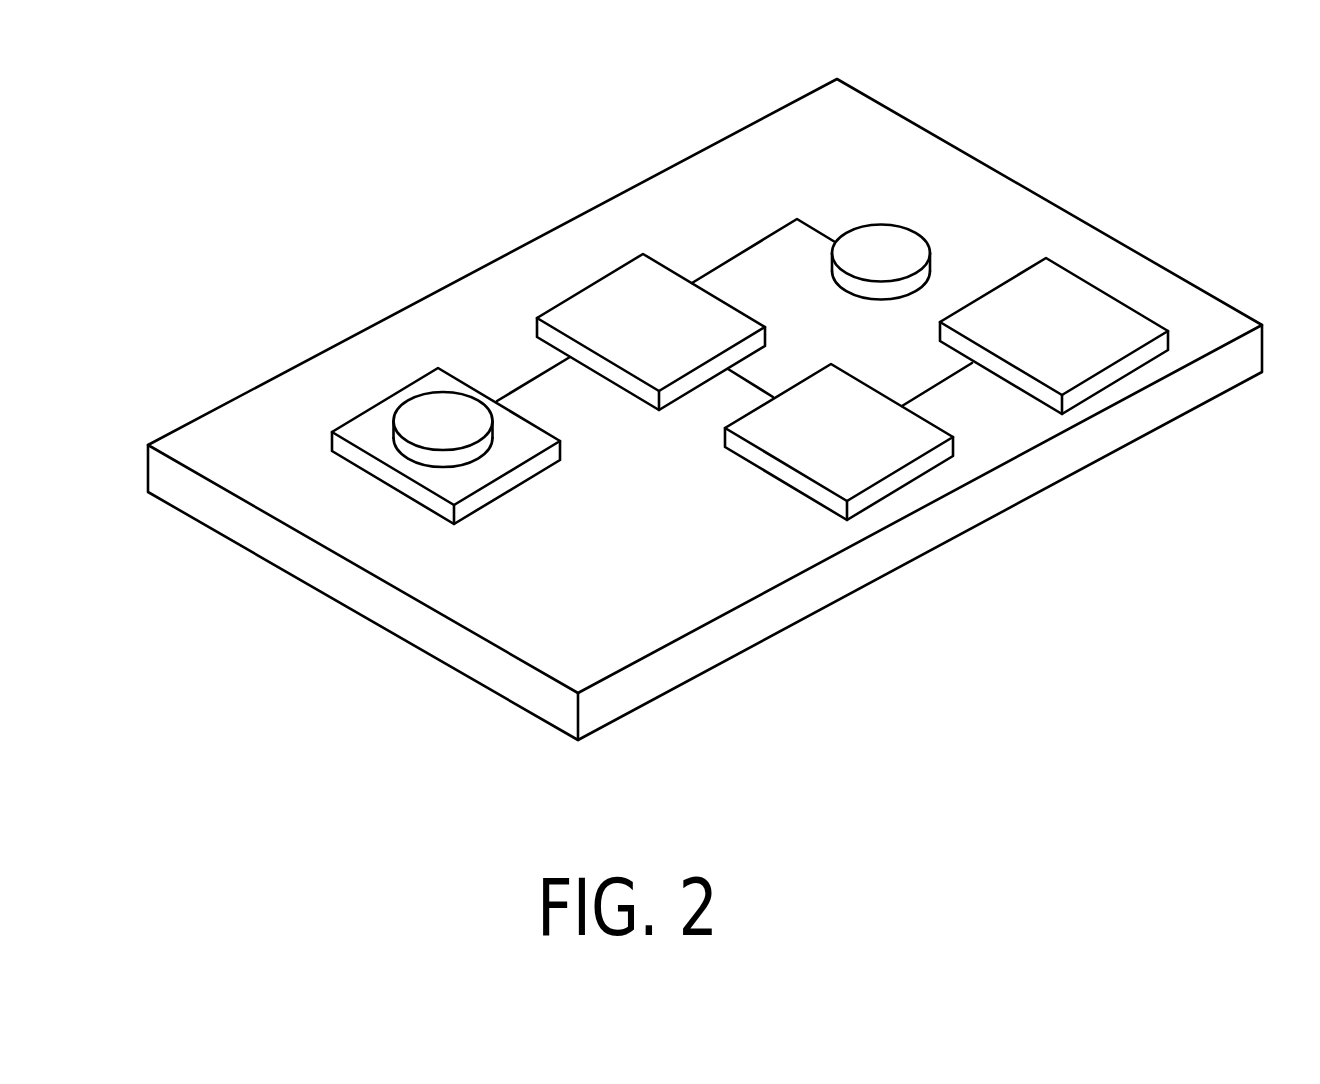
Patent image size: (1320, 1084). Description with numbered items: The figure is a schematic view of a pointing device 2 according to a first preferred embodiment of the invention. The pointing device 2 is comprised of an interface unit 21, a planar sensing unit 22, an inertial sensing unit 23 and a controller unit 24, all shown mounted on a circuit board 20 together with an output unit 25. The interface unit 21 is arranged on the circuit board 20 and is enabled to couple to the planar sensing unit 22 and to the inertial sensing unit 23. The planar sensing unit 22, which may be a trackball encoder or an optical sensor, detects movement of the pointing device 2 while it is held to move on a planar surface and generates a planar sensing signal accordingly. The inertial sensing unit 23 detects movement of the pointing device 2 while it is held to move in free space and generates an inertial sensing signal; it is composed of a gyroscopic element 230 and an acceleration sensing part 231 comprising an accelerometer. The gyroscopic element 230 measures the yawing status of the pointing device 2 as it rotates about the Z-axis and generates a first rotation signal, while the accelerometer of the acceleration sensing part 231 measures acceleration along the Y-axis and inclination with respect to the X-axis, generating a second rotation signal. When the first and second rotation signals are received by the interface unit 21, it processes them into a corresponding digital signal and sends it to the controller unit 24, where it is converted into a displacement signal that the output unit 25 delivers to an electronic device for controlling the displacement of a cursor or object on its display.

The pointing device 2 is at (470, 200).
The circuit board 20 is at (353, 363).
The interface unit 21 is at (635, 282).
The planar sensing unit 22 is at (897, 248).
The inertial sensing unit 23 is at (648, 512).
The gyroscopic element 230 is at (477, 425).
The acceleration sensing part 231 is at (480, 495).
The controller unit 24 is at (880, 455).
The output unit 25 is at (1033, 277).